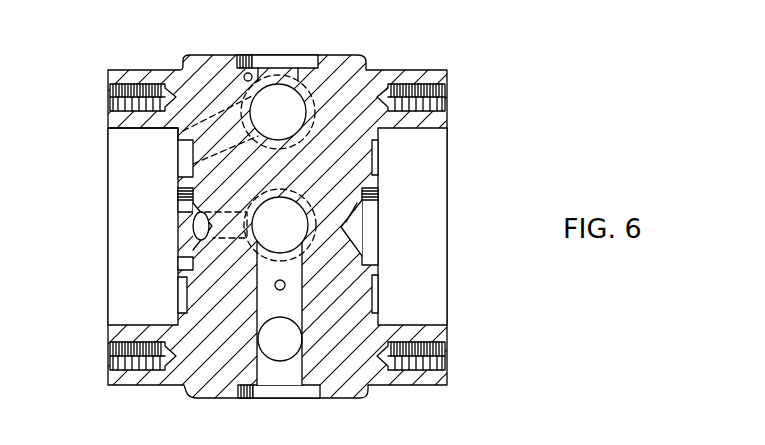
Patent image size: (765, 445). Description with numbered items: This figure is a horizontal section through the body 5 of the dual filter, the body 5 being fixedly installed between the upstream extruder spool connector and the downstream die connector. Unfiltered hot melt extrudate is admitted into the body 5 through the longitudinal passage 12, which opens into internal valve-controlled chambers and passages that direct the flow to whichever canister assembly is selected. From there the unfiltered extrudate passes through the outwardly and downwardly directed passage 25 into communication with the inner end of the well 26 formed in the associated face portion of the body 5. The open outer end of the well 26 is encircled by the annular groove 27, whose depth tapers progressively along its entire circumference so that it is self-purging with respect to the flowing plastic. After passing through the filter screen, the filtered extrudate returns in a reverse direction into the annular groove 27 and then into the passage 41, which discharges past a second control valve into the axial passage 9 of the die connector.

The body 5 is at (150, 65).
The axial passage 9 is at (267, 62).
The longitudinal passage 12 is at (255, 368).
The passage 25 is at (203, 230).
The well 26 is at (183, 208).
The annular groove 27 is at (178, 162).
The passage 41 is at (178, 130).